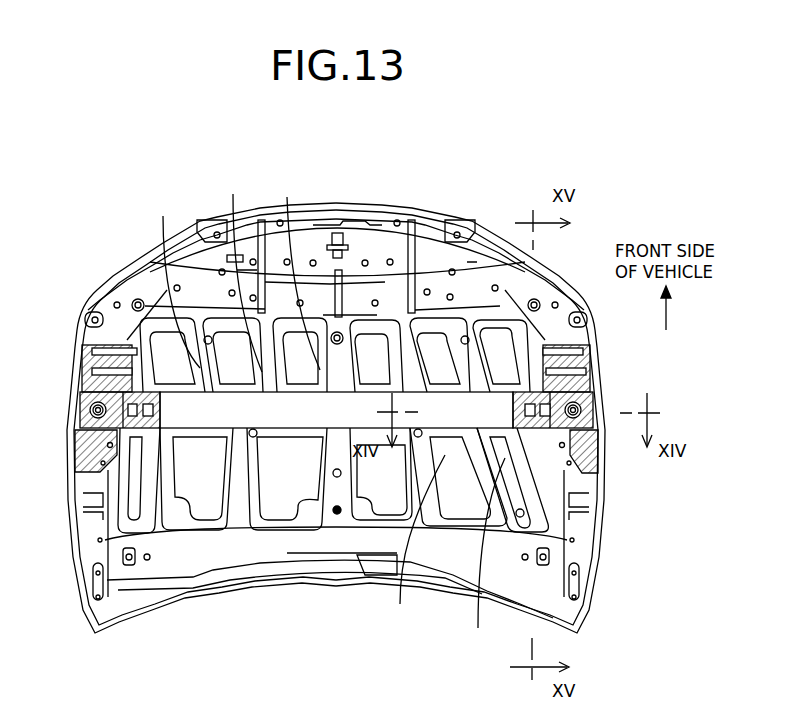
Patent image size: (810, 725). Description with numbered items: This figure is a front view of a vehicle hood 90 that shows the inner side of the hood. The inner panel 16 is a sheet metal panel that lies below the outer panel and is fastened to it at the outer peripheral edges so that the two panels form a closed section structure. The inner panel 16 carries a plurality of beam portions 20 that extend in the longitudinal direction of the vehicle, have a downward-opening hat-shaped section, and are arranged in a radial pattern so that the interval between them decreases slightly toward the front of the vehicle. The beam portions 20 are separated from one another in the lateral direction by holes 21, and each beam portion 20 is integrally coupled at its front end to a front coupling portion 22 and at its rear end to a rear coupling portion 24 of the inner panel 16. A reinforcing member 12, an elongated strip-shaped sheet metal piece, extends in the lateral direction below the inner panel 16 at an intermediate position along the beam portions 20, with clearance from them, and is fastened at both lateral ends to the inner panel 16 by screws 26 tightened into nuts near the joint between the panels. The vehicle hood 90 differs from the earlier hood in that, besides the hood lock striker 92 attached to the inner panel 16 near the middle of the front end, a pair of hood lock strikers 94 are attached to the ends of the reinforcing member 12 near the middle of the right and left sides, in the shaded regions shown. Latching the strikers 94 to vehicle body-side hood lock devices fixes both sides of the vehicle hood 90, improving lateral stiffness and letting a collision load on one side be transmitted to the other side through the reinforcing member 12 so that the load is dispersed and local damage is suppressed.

The reinforcing member 12 is at (233, 420).
The inner panel 16 is at (128, 270).
The beam portions 20 is at (330, 411).
The holes 21 is at (177, 373).
The front coupling portion 22 is at (386, 292).
The rear coupling portion 24 is at (265, 543).
The screws 26 is at (82, 428).
The vehicle hood 90 is at (462, 184).
The hood lock striker 92 is at (338, 232).
The hood lock strikers 94 is at (140, 418).